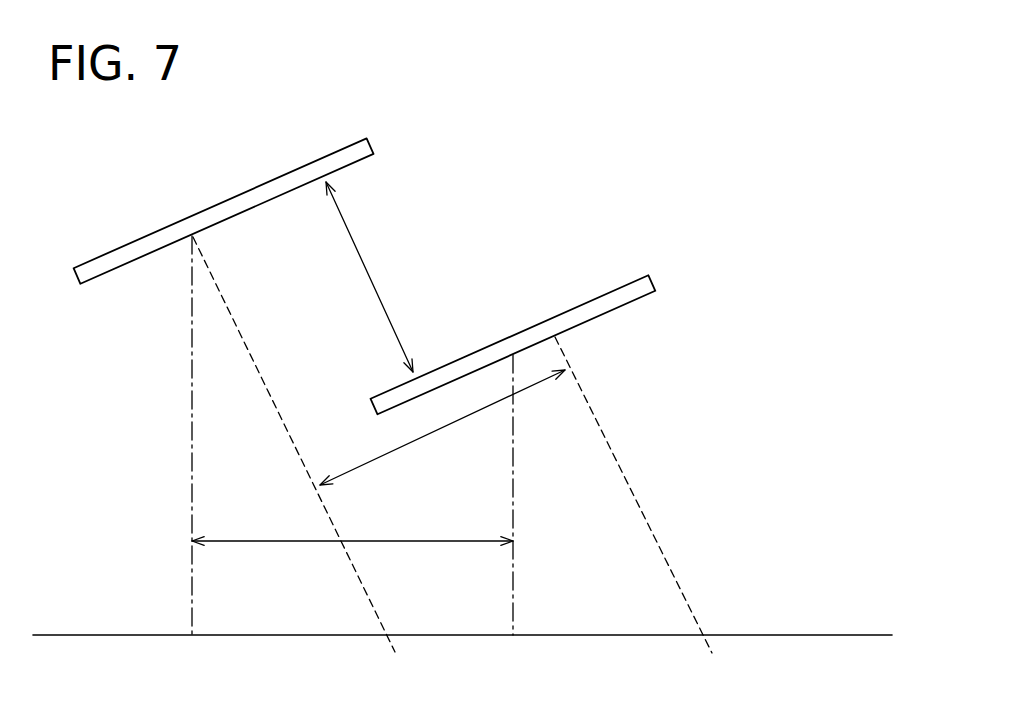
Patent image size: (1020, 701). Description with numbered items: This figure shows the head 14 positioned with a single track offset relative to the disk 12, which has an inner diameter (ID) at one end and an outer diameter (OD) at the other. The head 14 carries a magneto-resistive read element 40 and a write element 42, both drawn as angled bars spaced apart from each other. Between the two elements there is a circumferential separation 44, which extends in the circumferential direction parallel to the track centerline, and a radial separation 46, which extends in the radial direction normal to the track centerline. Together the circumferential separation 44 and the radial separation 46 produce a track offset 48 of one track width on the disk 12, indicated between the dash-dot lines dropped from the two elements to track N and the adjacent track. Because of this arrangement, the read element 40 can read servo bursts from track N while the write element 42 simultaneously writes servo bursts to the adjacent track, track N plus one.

The disk 12 is at (612, 635).
The head 14 is at (421, 250).
The magneto-resistive read element 40 is at (570, 303).
The write element 42 is at (280, 177).
The circumferential separation 44 is at (458, 265).
The radial separation 46 is at (455, 423).
The track offset 48 is at (277, 541).